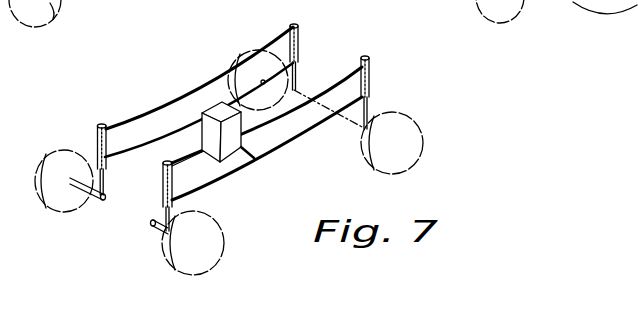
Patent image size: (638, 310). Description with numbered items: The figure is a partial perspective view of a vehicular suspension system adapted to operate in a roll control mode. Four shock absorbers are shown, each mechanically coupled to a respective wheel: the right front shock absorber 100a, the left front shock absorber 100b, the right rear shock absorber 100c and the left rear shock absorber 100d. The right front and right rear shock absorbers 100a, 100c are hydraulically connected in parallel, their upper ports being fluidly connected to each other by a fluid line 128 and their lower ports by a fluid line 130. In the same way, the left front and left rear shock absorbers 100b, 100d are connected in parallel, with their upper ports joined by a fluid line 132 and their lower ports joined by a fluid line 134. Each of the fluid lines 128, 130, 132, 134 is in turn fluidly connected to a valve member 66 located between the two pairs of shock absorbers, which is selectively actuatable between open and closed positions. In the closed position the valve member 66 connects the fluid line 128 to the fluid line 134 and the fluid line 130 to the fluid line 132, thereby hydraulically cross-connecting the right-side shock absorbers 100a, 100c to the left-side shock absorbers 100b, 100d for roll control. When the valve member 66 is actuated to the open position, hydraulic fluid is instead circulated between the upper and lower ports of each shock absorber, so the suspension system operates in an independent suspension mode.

The valve member 66 is at (204, 91).
The right front shock absorber 100a is at (93, 140).
The left front shock absorber 100b is at (154, 192).
The right rear shock absorber 100c is at (306, 35).
The left rear shock absorber 100d is at (374, 82).
The fluid line 128 is at (232, 82).
The fluid line 130 is at (160, 140).
The fluid line 132 is at (338, 82).
The fluid line 134 is at (233, 179).